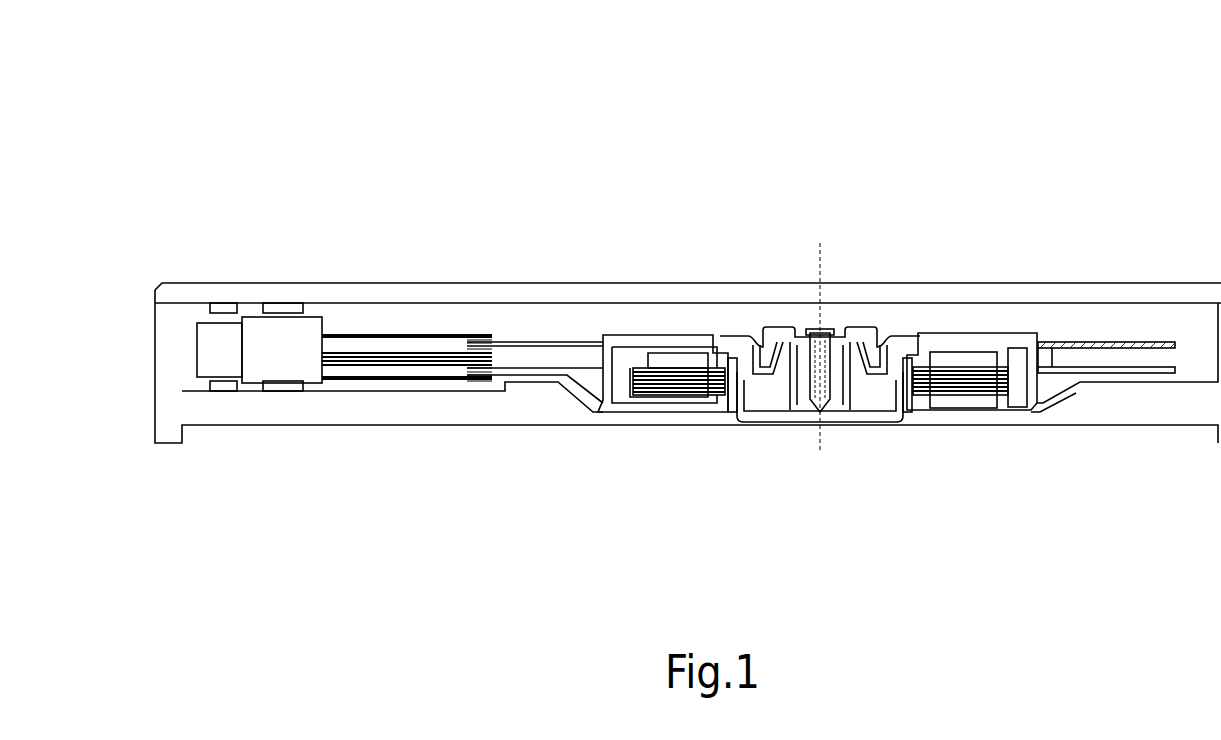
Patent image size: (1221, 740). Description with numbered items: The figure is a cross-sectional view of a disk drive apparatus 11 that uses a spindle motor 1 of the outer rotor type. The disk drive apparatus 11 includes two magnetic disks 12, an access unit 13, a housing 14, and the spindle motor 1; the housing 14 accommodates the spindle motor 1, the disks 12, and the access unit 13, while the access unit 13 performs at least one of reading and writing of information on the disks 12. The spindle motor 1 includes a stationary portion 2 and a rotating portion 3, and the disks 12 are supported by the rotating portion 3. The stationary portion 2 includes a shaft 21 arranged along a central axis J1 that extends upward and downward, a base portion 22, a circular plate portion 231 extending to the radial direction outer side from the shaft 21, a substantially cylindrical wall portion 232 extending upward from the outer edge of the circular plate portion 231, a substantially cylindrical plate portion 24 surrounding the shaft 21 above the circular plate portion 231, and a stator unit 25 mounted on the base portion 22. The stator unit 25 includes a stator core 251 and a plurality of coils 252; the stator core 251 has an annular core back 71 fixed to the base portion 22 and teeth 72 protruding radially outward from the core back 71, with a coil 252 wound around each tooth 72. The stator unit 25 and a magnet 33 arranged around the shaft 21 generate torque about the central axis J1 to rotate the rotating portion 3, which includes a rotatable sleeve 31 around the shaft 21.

The spindle motor 1 is at (788, 321).
The stationary portion 2 is at (1062, 382).
The rotating portion 3 is at (971, 308).
The disk drive apparatus 11 is at (387, 115).
The magnetic disks 12 is at (547, 368).
The access unit 13 is at (402, 365).
The housing 14 is at (363, 522).
The shaft 21 is at (802, 394).
The base portion 22 is at (963, 414).
The plate portion 24 is at (870, 333).
The stator unit 25 is at (591, 289).
The sleeve 31 is at (765, 389).
The magnet 33 is at (1040, 327).
The core back 71 is at (668, 372).
The teeth 72 is at (722, 375).
The circular plate portion 231 is at (858, 414).
The wall portion 232 is at (903, 405).
The stator core 251 is at (617, 289).
The coils 252 is at (660, 402).
The central axis J1 is at (821, 328).